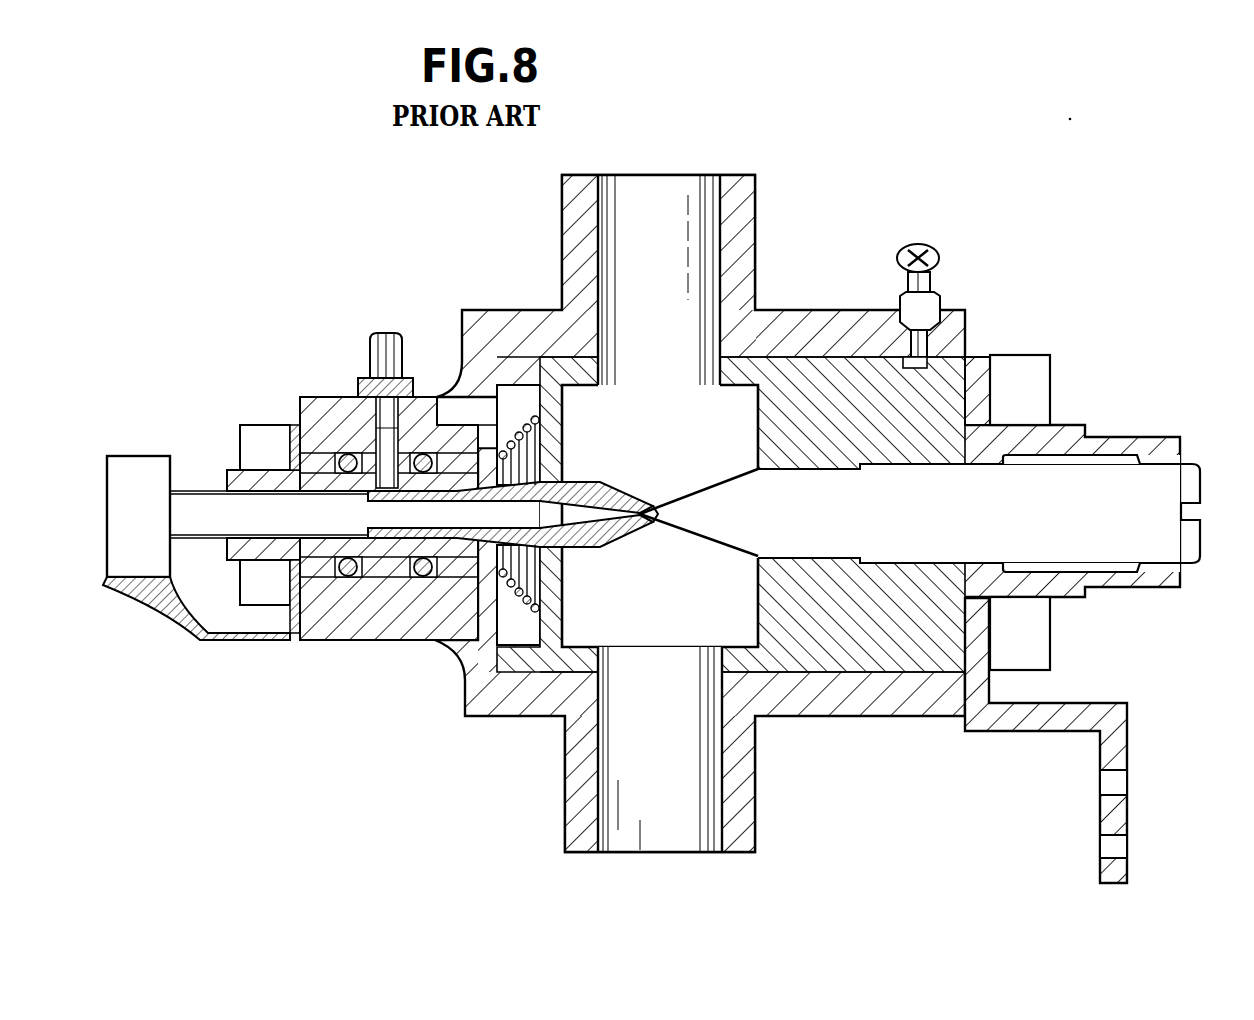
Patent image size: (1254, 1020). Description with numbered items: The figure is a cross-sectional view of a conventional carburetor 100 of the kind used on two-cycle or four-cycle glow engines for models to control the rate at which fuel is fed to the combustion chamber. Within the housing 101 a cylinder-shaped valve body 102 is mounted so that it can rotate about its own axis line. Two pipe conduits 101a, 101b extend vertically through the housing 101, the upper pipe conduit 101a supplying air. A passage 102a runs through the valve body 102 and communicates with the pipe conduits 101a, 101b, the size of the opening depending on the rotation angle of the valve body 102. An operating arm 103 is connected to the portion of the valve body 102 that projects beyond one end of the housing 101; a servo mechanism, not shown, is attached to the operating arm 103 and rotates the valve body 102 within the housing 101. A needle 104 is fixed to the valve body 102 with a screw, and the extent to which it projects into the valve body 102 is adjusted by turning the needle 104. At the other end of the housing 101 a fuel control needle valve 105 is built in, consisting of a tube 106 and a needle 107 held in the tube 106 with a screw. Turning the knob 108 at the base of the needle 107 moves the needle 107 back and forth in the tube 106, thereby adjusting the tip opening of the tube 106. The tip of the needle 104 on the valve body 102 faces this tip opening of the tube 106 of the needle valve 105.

The carburetor 100 is at (833, 243).
The housing 101 is at (838, 692).
The pipe conduit 101a is at (695, 202).
The pipe conduit 101b is at (693, 848).
The valve body 102 is at (824, 573).
The passage 102a is at (647, 620).
The operating arm 103 is at (1046, 718).
The needle 104 is at (1108, 492).
The fuel control needle valve 105 is at (497, 238).
The tube 106 is at (438, 512).
The needle 107 is at (442, 395).
The knob 108 is at (155, 456).